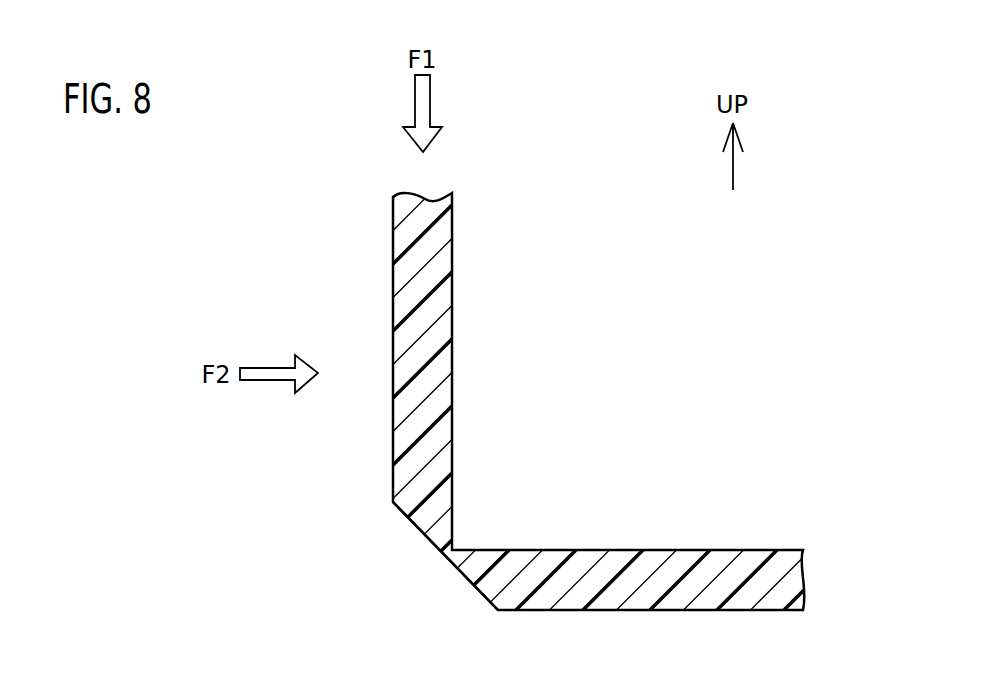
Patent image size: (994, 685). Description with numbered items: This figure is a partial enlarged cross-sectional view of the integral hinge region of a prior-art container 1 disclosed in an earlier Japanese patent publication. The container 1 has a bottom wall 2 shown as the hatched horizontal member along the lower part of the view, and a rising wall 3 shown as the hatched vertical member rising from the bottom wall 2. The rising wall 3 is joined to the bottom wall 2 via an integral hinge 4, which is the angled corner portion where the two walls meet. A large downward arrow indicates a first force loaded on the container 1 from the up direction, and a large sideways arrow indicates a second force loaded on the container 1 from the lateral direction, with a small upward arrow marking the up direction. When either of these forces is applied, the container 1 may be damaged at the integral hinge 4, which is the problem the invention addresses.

The container 1 is at (454, 252).
The bottom wall 2 is at (702, 570).
The rising wall 3 is at (440, 369).
The integral hinge 4 is at (450, 557).